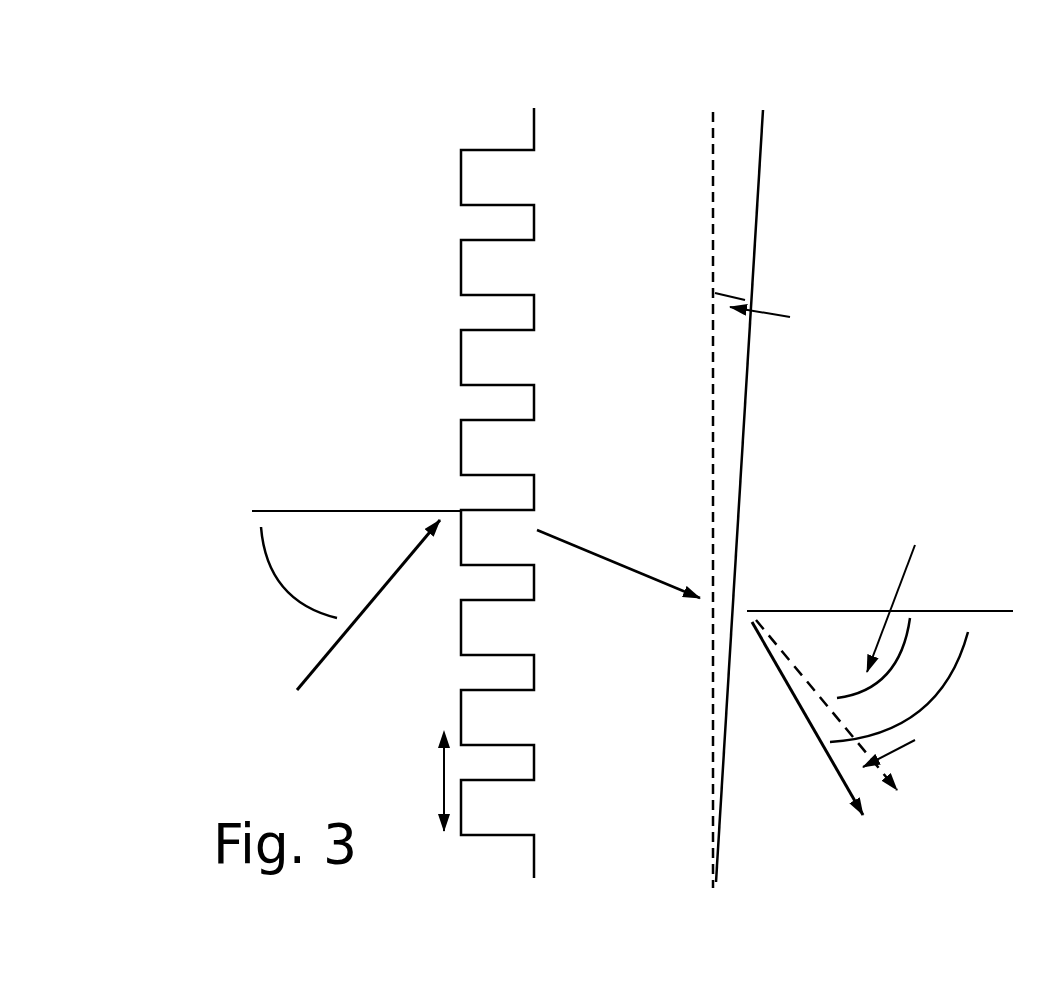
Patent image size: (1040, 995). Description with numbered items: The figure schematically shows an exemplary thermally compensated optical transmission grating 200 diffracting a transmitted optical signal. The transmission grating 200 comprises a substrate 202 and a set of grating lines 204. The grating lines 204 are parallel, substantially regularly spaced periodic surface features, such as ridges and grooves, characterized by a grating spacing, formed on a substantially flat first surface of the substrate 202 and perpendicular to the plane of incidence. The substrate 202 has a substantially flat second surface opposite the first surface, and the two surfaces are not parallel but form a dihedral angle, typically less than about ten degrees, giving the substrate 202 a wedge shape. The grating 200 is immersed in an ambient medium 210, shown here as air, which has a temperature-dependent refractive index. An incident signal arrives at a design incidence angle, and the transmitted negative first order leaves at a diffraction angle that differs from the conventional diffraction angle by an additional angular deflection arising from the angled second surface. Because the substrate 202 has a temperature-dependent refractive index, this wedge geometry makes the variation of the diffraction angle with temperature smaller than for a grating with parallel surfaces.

The optical transmission grating 200 is at (293, 145).
The substrate 202 is at (647, 180).
The grating lines 204 is at (432, 282).
The ambient medium 210 is at (353, 230).